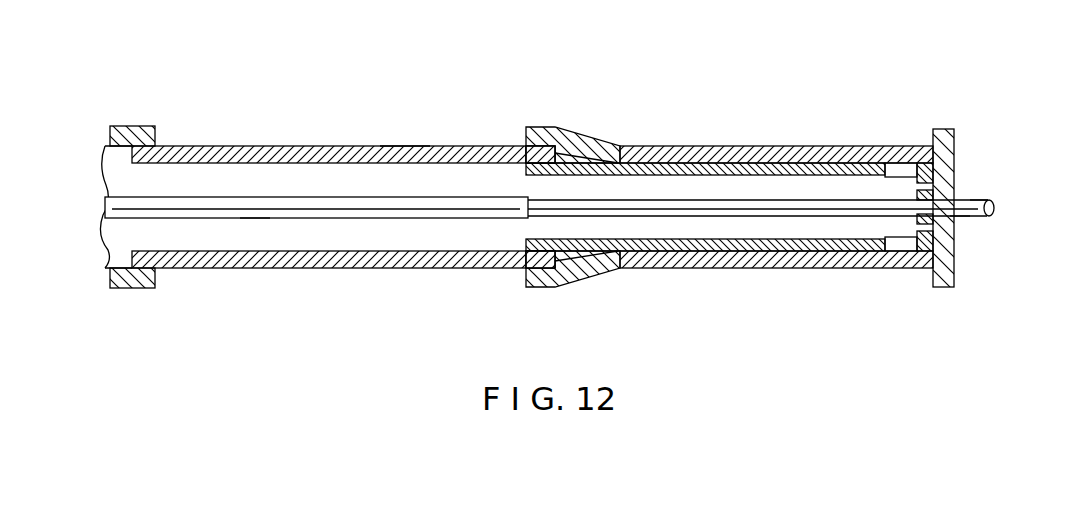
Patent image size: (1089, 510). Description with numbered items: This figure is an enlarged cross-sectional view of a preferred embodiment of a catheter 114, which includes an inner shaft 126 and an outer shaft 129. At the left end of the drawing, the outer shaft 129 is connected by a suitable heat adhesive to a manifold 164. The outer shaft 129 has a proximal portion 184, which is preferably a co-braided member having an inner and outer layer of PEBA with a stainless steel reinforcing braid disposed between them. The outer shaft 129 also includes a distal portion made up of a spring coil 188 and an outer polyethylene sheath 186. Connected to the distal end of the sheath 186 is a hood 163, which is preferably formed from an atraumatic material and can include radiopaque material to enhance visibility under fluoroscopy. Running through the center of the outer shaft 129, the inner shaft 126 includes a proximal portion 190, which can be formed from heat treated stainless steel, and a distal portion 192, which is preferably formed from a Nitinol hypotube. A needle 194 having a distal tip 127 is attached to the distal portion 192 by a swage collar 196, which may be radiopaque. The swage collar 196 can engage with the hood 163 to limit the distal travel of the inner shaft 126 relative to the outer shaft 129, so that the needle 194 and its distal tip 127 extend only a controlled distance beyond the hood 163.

The catheter 114 is at (483, 104).
The manifold 164 is at (137, 126).
The proximal portion 184 is at (293, 146).
The outer shaft 129 is at (403, 145).
The spring coil 188 is at (620, 146).
The outer polyethylene sheath 186 is at (722, 146).
The distal portion 192 is at (721, 222).
The swage collar 196 is at (917, 225).
The hood 163 is at (945, 129).
The inner shaft 126 is at (428, 220).
The proximal portion 190 is at (255, 218).
The distal tip 127 is at (984, 200).
The needle 194 is at (958, 217).